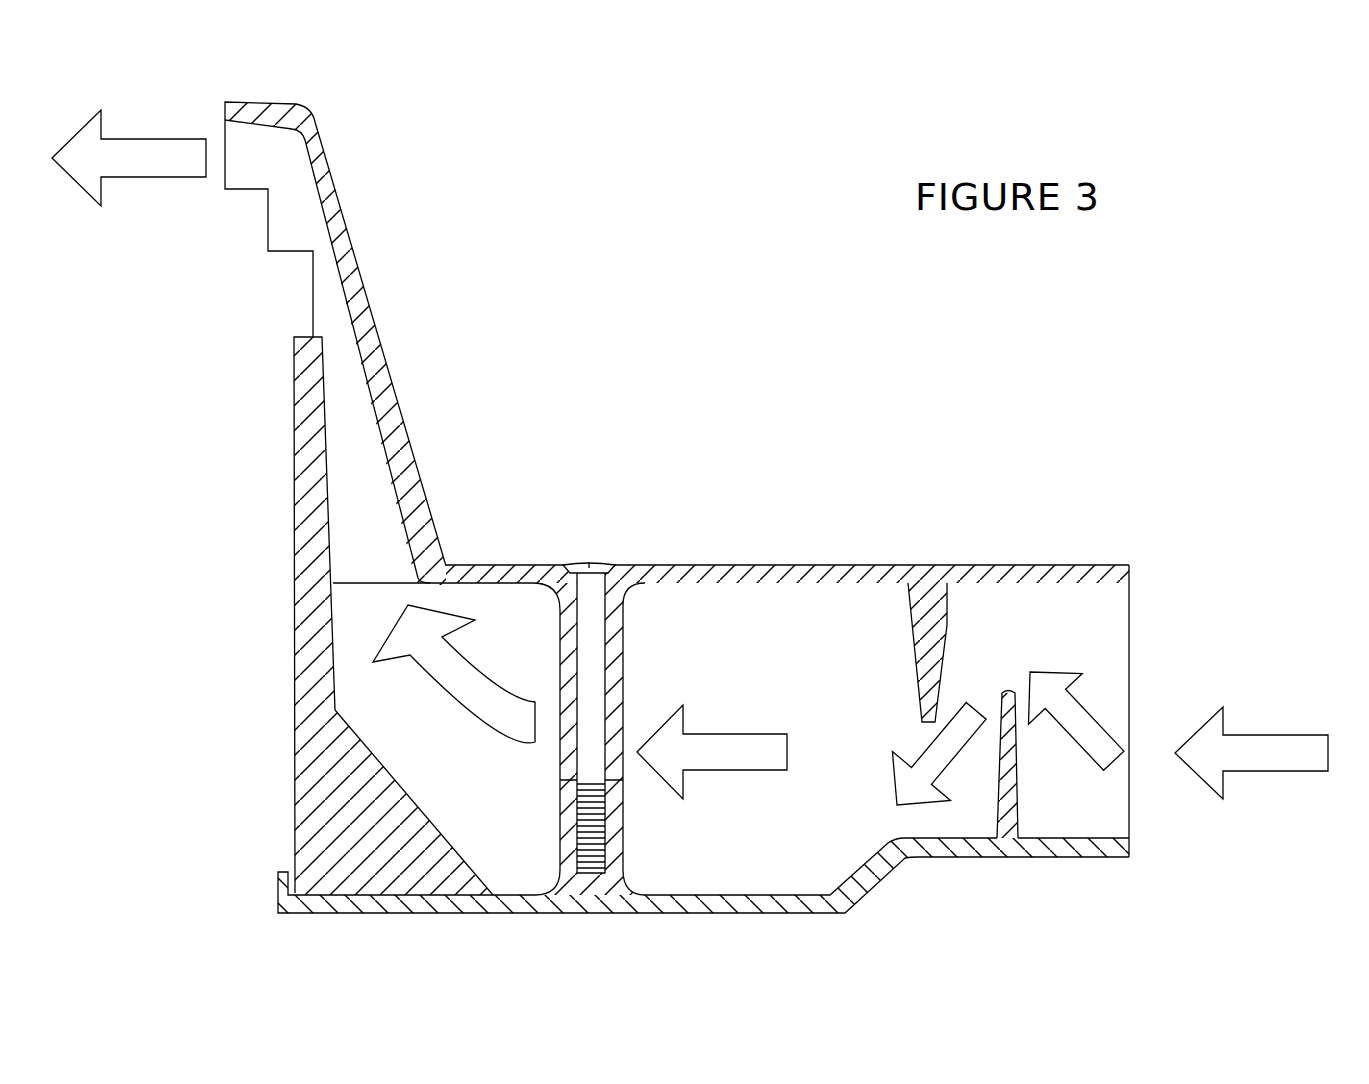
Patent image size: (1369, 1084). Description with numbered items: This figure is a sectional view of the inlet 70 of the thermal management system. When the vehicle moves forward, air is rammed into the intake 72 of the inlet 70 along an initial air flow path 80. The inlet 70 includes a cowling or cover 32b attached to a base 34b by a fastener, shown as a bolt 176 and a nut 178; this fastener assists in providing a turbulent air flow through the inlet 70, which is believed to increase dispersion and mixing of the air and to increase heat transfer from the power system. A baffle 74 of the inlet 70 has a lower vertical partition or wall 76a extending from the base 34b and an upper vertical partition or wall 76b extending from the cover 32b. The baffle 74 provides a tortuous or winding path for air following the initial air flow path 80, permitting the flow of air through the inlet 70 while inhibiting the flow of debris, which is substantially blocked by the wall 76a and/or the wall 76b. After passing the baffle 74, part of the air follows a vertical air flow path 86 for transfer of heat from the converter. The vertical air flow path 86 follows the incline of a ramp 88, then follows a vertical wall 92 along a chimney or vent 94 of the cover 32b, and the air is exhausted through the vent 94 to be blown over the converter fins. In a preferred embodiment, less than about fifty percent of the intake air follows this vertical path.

The vent 94 is at (221, 108).
The vertical wall 92 is at (327, 442).
The ramp 88 is at (450, 837).
The cover 32b is at (860, 564).
The upper vertical partition or wall 76b is at (947, 625).
The lower vertical partition or wall 76a is at (1018, 805).
The nut 178 is at (626, 842).
The bolt 176 is at (598, 563).
The base 34b is at (783, 910).
The inlet 70 is at (1130, 480).
The intake 72 is at (1155, 627).
The baffle 74 is at (1033, 657).
The vertical air flow path 86 is at (463, 657).
The initial air flow path 80 is at (1273, 735).